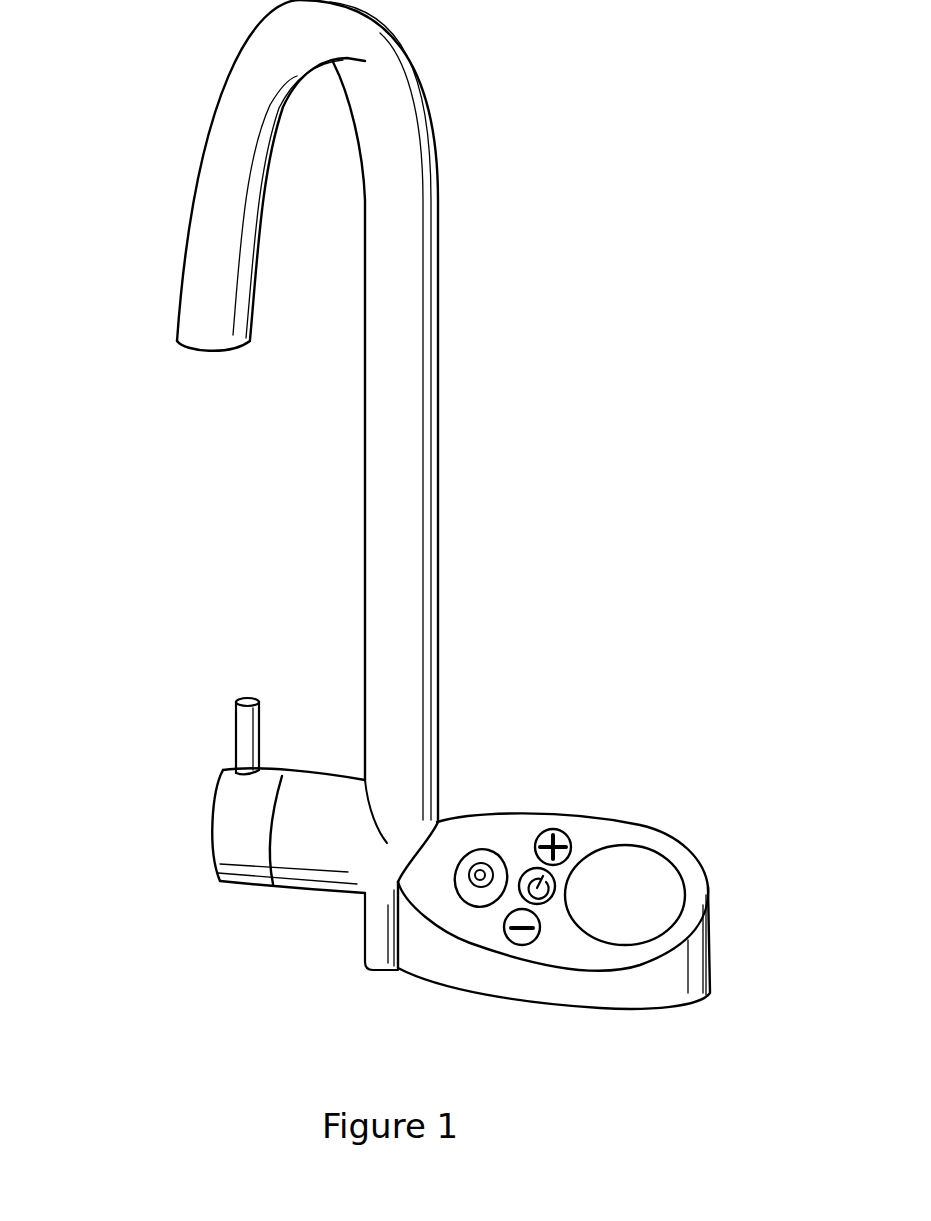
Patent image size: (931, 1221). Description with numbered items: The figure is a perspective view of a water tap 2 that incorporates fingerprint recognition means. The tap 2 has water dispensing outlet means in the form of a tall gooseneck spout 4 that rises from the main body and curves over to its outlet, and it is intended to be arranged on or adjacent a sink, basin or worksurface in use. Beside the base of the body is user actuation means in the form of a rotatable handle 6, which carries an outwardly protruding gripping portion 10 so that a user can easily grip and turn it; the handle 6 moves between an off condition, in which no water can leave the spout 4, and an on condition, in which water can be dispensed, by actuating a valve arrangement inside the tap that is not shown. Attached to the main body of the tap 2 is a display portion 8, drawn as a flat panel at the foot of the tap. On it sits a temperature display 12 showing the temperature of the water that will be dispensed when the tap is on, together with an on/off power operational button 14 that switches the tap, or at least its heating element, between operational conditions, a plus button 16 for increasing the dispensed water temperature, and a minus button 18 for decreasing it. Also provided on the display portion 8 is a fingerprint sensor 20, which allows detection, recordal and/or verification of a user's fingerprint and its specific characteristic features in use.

The water tap 2 is at (545, 475).
The spout 4 is at (160, 278).
The rotatable handle 6 is at (240, 853).
The display portion 8 is at (725, 828).
The gripping portion 10 is at (248, 735).
The temperature display 12 is at (674, 877).
The power operational button 14 is at (550, 876).
The "+" button 16 is at (559, 830).
The "−" button 18 is at (512, 942).
The fingerprint sensor 20 is at (484, 869).